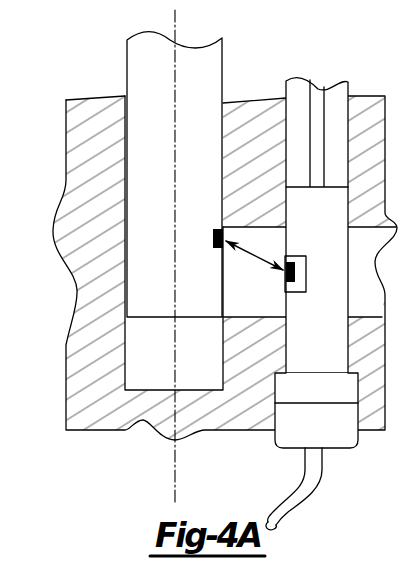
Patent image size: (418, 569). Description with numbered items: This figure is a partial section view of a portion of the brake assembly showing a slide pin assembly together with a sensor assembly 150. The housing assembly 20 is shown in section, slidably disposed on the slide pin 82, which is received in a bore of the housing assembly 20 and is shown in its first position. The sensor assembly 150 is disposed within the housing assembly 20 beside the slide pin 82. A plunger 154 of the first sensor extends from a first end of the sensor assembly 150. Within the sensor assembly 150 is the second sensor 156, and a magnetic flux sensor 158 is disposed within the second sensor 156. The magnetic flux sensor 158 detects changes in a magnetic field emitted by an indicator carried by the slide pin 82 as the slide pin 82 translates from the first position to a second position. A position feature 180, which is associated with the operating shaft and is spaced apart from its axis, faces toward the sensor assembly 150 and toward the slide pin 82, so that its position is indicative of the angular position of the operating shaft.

The housing assembly 20 is at (73, 143).
The slide pin 82 is at (214, 69).
The sensor assembly 150 is at (337, 281).
The plunger 154 is at (317, 100).
The second sensor 156 is at (291, 292).
The magnetic flux sensor 158 is at (296, 272).
The position feature 180 is at (213, 232).